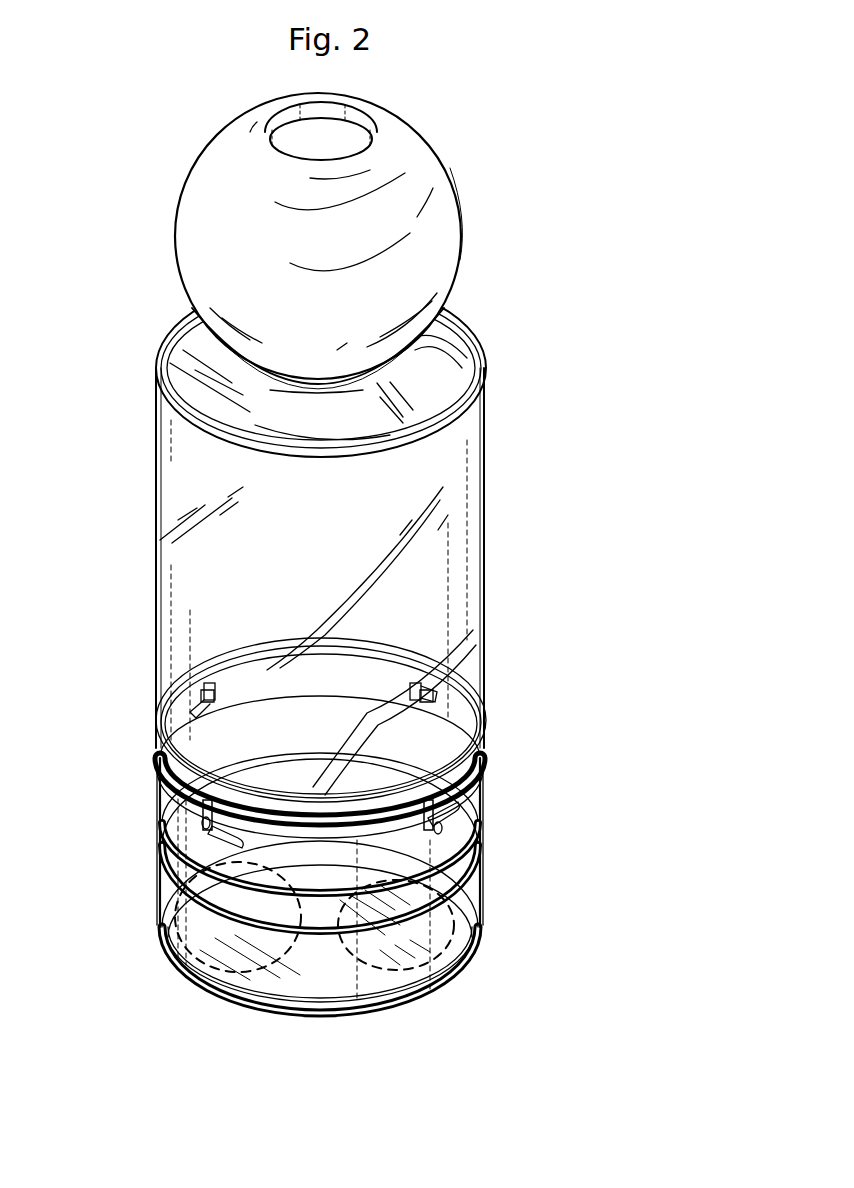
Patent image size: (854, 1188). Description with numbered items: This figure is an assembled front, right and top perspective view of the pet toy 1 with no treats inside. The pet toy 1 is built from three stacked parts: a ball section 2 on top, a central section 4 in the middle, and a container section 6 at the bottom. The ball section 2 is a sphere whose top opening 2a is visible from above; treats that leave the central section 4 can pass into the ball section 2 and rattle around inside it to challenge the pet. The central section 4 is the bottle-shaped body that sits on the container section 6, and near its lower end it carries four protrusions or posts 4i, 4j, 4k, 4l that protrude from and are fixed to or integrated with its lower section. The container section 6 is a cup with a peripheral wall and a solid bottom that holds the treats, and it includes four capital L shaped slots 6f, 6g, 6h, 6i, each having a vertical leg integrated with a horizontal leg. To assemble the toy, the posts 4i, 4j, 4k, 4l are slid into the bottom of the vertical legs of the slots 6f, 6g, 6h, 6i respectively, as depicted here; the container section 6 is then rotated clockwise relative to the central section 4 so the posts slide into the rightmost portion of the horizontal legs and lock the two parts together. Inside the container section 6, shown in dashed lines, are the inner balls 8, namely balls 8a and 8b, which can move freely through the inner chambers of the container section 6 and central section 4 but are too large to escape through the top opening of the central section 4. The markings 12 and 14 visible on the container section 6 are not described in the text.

The pet toy 1 is at (457, 172).
The ball section 2 is at (165, 237).
The top opening 2a is at (321, 131).
The central section 4 is at (148, 563).
The protrusion or post 4i is at (213, 698).
The protrusion or post 4j is at (417, 692).
The protrusion or post 4k is at (200, 823).
The protrusion or post 4l is at (445, 829).
The container section 6 is at (153, 897).
The capital L shaped slot 6f is at (208, 688).
The capital L shaped slot 6g is at (427, 686).
The capital L shaped slot 6h is at (218, 805).
The capital L shaped slot 6i is at (424, 807).
The inner balls 8 is at (203, 951).
The inner ball 8a is at (228, 947).
The inner ball 8b is at (380, 967).
The marking 12 is at (209, 869).
The marking 14 is at (209, 901).